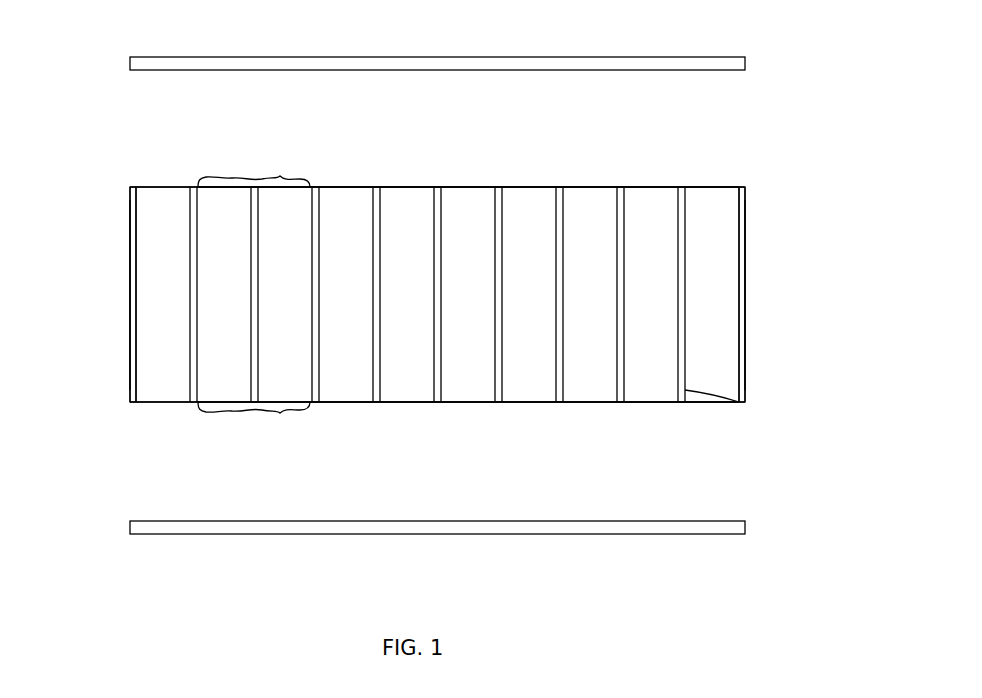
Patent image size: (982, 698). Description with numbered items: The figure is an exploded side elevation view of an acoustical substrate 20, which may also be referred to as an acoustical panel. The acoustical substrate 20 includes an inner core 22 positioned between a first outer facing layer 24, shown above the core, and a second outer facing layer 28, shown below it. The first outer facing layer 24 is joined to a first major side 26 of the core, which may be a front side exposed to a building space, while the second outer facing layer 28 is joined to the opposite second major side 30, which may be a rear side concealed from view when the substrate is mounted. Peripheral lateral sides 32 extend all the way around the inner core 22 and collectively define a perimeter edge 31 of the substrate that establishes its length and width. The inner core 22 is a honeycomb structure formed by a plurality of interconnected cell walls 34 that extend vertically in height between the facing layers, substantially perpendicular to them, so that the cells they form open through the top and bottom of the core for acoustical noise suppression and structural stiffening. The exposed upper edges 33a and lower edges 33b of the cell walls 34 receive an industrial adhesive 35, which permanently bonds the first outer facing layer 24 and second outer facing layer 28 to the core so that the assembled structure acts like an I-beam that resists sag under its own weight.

The acoustical substrate 20 is at (83, 88).
The inner core 22 is at (164, 281).
The first outer facing layer 24 is at (473, 57).
The first major side 26 is at (418, 188).
The second outer facing layer 28 is at (478, 521).
The second major side 30 is at (410, 405).
The perimeter edge 31 is at (130, 227).
The peripheral lateral sides 32 is at (130, 258).
The upper edges 33a is at (531, 187).
The lower edges 33b is at (580, 402).
The cell walls 34 is at (686, 390).
The adhesive 35 is at (277, 176).